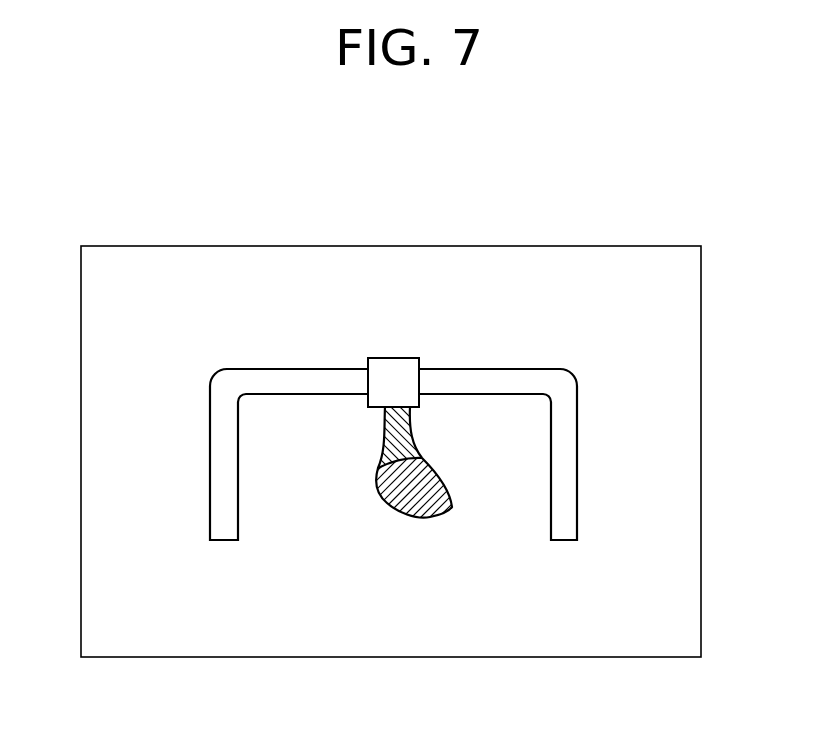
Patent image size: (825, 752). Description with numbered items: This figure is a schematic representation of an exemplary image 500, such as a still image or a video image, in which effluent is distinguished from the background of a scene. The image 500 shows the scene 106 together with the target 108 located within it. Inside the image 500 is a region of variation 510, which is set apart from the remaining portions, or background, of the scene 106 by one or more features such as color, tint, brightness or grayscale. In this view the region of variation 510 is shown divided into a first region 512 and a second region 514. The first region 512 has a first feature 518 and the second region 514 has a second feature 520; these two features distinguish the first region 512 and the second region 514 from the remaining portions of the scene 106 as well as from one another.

The image 500 is at (660, 183).
The scene 106 is at (108, 258).
The target 108 is at (211, 619).
The second region 514 is at (462, 500).
The first region 512 is at (424, 425).
The region of variation 510 is at (376, 477).
The first feature 518 is at (393, 430).
The second feature 520 is at (383, 497).